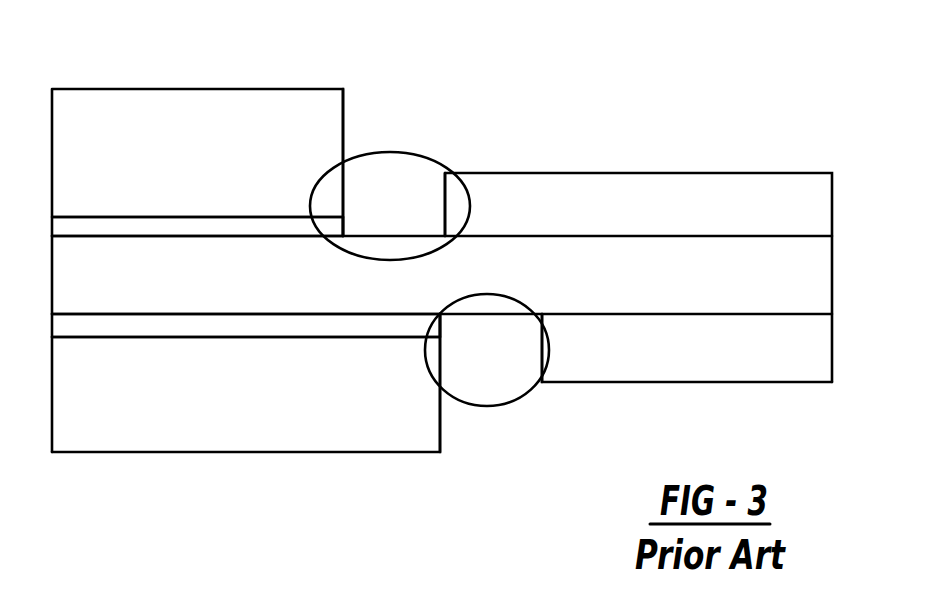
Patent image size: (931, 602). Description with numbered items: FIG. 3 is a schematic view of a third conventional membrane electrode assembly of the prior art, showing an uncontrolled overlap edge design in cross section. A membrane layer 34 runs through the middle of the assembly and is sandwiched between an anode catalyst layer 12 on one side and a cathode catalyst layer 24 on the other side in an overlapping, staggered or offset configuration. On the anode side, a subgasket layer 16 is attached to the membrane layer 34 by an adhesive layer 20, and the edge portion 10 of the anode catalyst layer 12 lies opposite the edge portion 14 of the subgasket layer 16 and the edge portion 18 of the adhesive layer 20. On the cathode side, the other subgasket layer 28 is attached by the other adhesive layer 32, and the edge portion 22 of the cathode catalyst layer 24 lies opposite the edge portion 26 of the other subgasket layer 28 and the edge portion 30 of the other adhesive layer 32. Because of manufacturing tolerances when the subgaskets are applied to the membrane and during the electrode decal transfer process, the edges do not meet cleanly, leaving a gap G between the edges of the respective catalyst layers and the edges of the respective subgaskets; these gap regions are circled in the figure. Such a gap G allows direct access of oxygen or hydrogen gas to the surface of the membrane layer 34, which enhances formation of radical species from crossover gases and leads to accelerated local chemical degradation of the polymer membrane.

The edge portion of the anode catalyst layer 10 is at (443, 195).
The anode catalyst layer 12 is at (603, 183).
The edge portion of the subgasket layer 14 is at (343, 176).
The subgasket layer 16 is at (178, 107).
The edge portion of the adhesive layer 18 is at (340, 224).
The adhesive layer 20 is at (143, 223).
The edge portion of the cathode catalyst layer 22 is at (540, 337).
The cathode catalyst layer 24 is at (758, 363).
The edge portion of the other subgasket layer 26 is at (442, 358).
The other subgasket layer 28 is at (157, 433).
The edge portion of the other adhesive layer 30 is at (440, 324).
The other adhesive layer 32 is at (190, 318).
The membrane layer 34 is at (823, 272).
The gap G is at (392, 160).